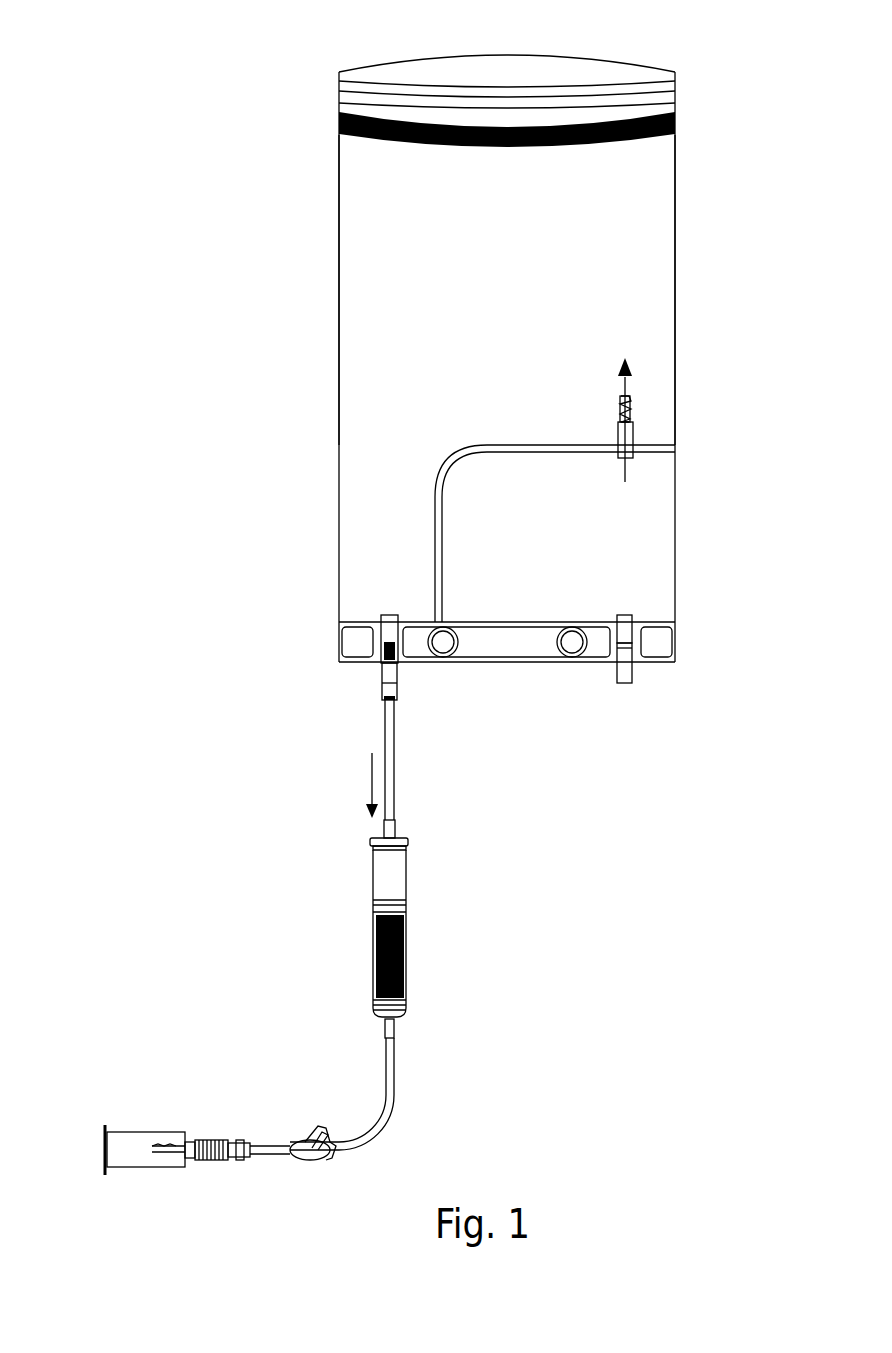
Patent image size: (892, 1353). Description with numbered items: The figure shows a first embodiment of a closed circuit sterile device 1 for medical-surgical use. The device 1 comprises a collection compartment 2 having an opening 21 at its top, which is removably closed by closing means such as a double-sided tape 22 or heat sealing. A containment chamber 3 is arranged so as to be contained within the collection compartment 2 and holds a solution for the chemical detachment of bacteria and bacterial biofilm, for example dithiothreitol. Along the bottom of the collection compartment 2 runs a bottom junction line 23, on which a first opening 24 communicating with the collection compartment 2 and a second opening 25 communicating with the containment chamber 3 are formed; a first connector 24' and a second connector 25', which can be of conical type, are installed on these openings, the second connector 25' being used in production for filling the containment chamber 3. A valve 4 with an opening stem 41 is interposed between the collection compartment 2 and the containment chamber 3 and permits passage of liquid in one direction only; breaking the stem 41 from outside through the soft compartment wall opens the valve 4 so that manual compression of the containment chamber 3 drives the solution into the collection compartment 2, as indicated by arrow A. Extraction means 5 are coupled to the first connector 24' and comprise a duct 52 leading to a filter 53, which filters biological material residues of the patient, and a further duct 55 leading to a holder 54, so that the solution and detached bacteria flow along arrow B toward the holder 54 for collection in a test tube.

The closed circuit sterile device 1 is at (250, 207).
The collection compartment 2 is at (512, 282).
The containment chamber 3 is at (555, 551).
The opening 21 is at (583, 68).
The double-sided tape 22 is at (648, 133).
The bottom junction line 23 is at (665, 642).
The first opening 24 is at (428, 673).
The first connector 24' is at (351, 697).
The second opening 25 is at (675, 668).
The second connector 25' is at (605, 697).
The valve 4 is at (633, 440).
The opening stem 41 is at (630, 412).
The extraction means 5 is at (215, 875).
The duct 52 is at (393, 790).
The filter 53 is at (410, 958).
The holder 54 is at (133, 1140).
The further duct 55 is at (395, 1080).